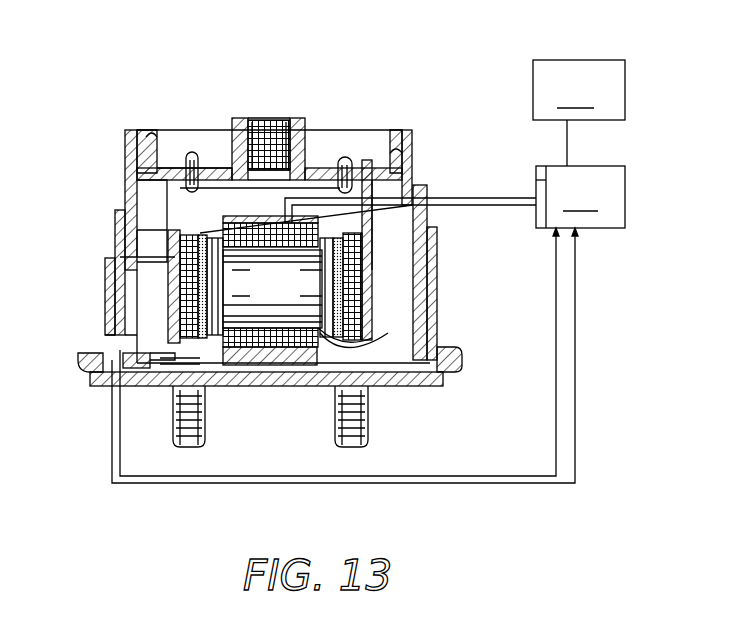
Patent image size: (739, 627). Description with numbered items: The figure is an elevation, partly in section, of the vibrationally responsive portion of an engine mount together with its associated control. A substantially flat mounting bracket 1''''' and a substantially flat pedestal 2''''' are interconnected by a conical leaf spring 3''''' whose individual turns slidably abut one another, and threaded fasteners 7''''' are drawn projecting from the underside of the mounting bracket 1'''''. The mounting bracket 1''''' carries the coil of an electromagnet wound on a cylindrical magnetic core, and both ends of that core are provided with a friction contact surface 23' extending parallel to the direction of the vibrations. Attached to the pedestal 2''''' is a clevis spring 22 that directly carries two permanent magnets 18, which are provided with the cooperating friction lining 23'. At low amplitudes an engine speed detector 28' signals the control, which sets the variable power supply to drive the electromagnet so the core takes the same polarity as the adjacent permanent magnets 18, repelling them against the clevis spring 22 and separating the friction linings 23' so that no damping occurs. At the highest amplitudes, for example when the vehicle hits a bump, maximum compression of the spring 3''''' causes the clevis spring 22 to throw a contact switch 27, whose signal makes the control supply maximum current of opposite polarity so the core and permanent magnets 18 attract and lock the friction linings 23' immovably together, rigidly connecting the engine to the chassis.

The mounting bracket 1''''' is at (281, 394).
The pedestal 2''''' is at (273, 170).
The conical leaf spring 3''''' is at (325, 274).
The mounting bolt 7''''' is at (270, 428).
The permanent magnets 18 is at (167, 257).
The clevis spring 22 is at (170, 208).
The friction contact surface 23' is at (378, 334).
The contact switch 27 is at (143, 380).
The engine speed detector 28' is at (579, 90).